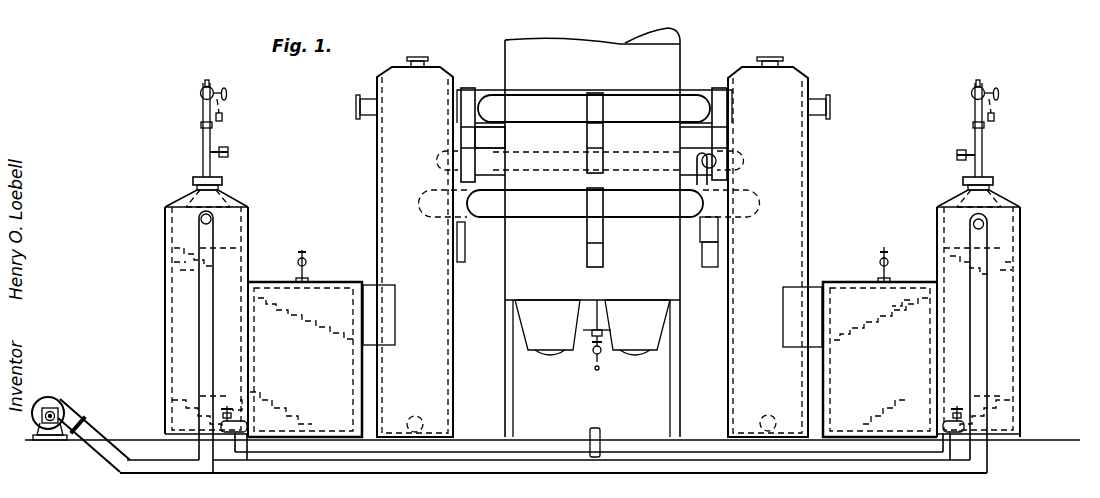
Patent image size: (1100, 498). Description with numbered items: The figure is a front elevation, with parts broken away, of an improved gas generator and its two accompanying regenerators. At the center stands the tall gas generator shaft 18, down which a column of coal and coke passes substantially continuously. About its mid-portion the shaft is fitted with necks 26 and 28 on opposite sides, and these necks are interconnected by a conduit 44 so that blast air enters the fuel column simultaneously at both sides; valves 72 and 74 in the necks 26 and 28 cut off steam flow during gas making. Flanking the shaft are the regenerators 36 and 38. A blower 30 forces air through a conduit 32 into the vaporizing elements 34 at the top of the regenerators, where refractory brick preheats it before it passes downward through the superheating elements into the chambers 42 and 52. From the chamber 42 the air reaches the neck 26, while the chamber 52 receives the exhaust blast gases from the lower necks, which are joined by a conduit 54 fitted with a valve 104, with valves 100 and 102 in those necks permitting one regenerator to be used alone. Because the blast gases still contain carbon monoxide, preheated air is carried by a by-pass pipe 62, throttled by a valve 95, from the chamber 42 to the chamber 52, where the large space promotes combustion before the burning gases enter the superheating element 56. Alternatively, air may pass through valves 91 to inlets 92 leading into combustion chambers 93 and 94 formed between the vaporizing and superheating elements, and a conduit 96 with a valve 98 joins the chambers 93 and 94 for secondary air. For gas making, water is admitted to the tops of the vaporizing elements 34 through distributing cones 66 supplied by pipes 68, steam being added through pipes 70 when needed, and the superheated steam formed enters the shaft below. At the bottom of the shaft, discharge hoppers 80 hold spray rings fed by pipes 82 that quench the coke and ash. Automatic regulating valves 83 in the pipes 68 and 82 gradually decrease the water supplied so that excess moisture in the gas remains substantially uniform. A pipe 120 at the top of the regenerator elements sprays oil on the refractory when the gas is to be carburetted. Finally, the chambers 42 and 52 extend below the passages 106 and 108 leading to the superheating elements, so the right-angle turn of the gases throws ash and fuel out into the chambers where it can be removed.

The gas generator shaft 18 is at (568, 42).
The neck 26 is at (480, 90).
The neck 28 is at (697, 87).
The blower 30 is at (54, 404).
The conduit 32 is at (325, 456).
The vaporizing element 34 is at (168, 246).
The regenerator 36 is at (262, 283).
The regenerator 38 is at (845, 290).
The chamber 42 is at (444, 335).
The conduit 44 is at (536, 100).
The chamber 52 is at (788, 165).
The conduit 54 is at (556, 214).
The superheating element 56 is at (910, 300).
The by-pass pipe 62 is at (630, 152).
The distributing cone 66 is at (226, 192).
The pipe 68 is at (203, 160).
The pipe 70 is at (225, 150).
The valve 72 is at (468, 155).
The valve 74 is at (718, 158).
The discharge hopper 80 is at (540, 348).
The pipe 82 is at (602, 330).
The automatic regulating valve 83 is at (213, 92).
The valve 91 is at (226, 405).
The inlet 92 is at (270, 418).
The combustion chamber 93 is at (258, 398).
The combustion chamber 94 is at (933, 396).
The valve 95 is at (696, 177).
The conduit 96 is at (522, 450).
The valve 98 is at (593, 430).
The valve 100 is at (464, 234).
The valve 102 is at (718, 256).
The valve 104 is at (603, 252).
The passage 106 is at (368, 292).
The passage 108 is at (808, 303).
The pipe 120 is at (306, 255).